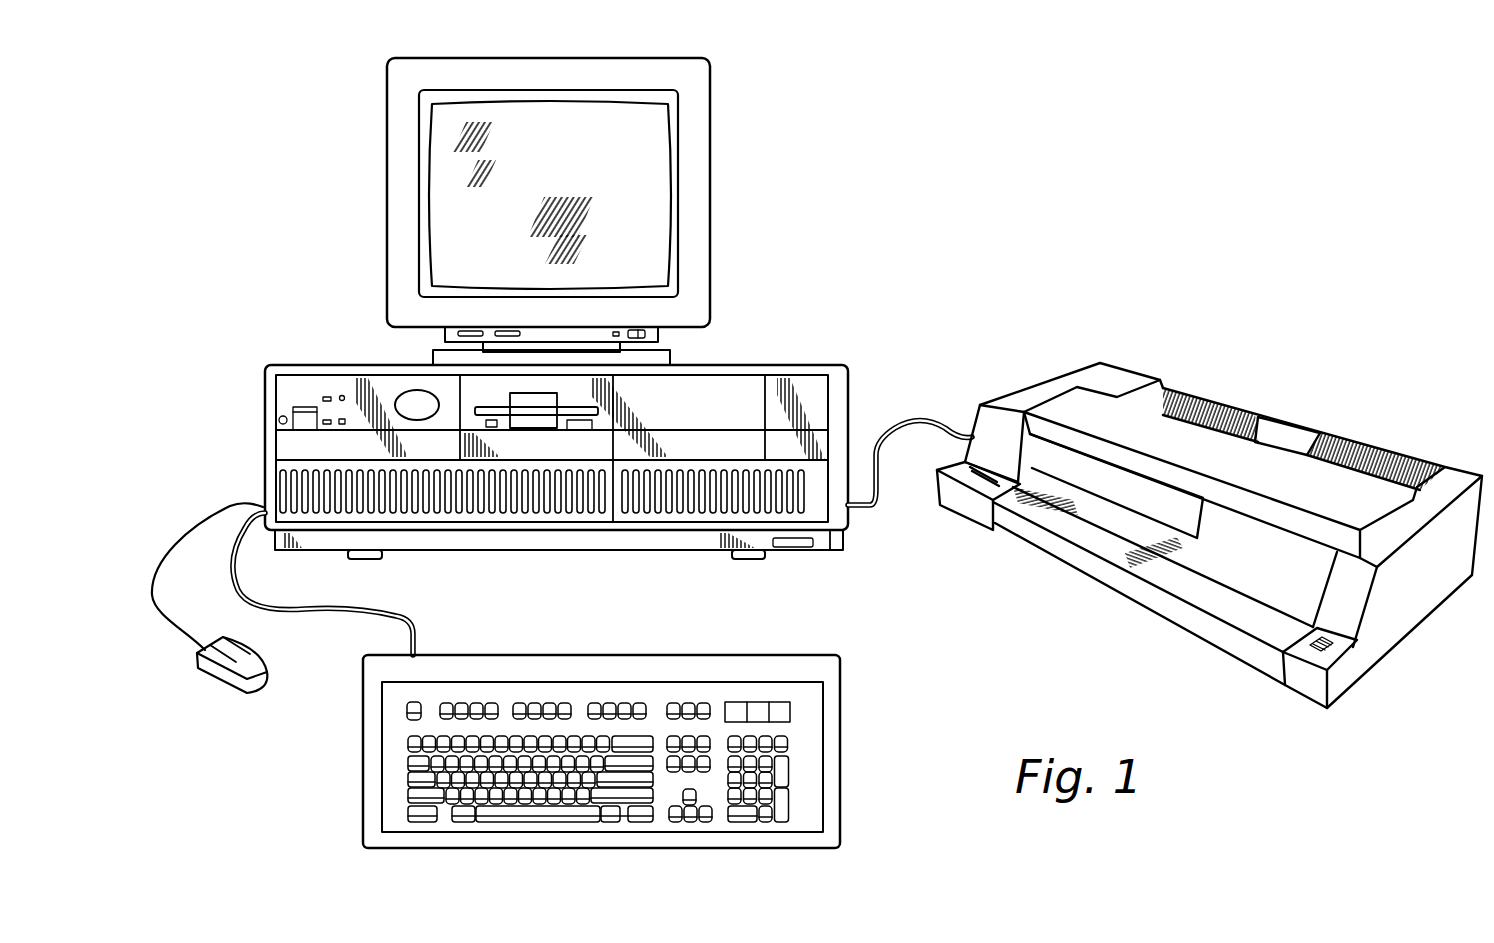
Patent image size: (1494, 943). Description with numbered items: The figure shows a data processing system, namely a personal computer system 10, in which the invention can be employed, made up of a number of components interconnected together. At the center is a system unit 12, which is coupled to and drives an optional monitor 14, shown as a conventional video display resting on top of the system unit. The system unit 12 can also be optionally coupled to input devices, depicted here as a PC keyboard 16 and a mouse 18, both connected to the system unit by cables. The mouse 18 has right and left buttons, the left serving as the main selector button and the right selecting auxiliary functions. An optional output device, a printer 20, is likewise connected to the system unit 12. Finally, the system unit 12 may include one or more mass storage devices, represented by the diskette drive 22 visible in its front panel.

The personal computer system 10 is at (927, 180).
The system unit 12 is at (774, 345).
The monitor 14 is at (728, 224).
The PC keyboard 16 is at (716, 635).
The mouse 18 is at (213, 675).
The printer 20 is at (1036, 358).
The diskette drive 22 is at (540, 427).